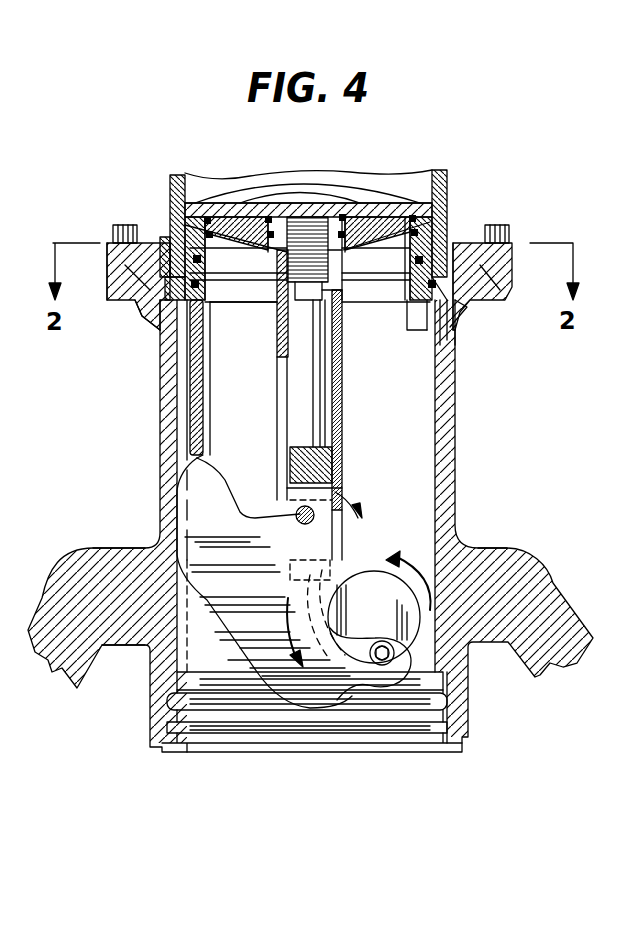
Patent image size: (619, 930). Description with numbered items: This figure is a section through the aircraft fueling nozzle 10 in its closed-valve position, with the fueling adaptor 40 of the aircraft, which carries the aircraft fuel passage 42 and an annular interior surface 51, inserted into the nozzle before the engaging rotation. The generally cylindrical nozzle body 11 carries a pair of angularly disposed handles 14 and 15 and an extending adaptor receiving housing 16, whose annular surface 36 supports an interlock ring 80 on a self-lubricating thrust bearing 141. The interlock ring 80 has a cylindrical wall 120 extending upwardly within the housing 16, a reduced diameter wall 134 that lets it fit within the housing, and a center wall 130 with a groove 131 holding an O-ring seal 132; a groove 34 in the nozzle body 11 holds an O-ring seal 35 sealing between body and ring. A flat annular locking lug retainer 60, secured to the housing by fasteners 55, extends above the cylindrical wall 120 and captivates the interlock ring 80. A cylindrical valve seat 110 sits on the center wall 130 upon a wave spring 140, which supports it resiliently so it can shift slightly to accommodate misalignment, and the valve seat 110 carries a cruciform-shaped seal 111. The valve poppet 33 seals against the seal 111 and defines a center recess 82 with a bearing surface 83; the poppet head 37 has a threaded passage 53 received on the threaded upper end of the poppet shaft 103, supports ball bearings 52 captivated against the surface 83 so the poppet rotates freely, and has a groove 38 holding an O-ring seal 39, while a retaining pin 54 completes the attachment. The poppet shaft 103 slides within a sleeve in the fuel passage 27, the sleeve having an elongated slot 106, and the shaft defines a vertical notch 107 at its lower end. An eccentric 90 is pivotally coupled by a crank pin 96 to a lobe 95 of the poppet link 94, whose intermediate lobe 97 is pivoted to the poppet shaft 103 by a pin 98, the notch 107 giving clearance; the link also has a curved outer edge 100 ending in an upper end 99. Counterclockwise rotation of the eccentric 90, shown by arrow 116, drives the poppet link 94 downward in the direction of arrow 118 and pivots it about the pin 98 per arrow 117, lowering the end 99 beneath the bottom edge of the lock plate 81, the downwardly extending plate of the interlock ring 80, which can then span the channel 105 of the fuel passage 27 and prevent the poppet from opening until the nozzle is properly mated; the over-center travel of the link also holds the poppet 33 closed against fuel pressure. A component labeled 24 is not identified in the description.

The aircraft fueling nozzle 10 is at (518, 222).
The nozzle body 11 is at (455, 410).
The handle 14 is at (85, 555).
The handle 15 is at (560, 580).
The adaptor receiving housing 16 is at (113, 302).
The stem nut 24 is at (287, 260).
The fuel passage 27 is at (393, 415).
The valve poppet 33 is at (405, 217).
The groove 34 is at (463, 355).
The O-ring seal 35 is at (463, 338).
The annular surface 36 is at (466, 320).
The poppet head 37 is at (335, 217).
The groove 38 is at (305, 217).
The O-ring seal 39 is at (292, 217).
The fueling adaptor 40 is at (178, 176).
The fuel passage 42 is at (305, 192).
The annular interior surface 51 is at (200, 217).
The ball bearings 52 is at (378, 225).
The threaded passage 53 is at (345, 262).
The retaining pin 54 is at (343, 290).
The fasteners 55 is at (125, 223).
The locking lug retainer 60 is at (515, 241).
The interlock ring 80 is at (350, 302).
The lock plate 81 is at (197, 400).
The center recess 82 is at (346, 227).
The bearing surface 83 is at (266, 217).
The eccentric 90 is at (348, 577).
The poppet link 94 is at (142, 657).
The lobe 95 is at (420, 685).
The crank pin 96 is at (395, 655).
The intermediate lobe 97 is at (312, 540).
The pin 98 is at (318, 515).
The upper end 99 is at (213, 468).
The curved outer edge 100 is at (245, 660).
The poppet shaft 103 is at (305, 418).
The channel 105 is at (180, 378).
The elongated slot 106 is at (283, 362).
The vertical notch 107 is at (300, 515).
The valve seat 110 is at (460, 260).
The cruciform-shaped seal 111 is at (420, 217).
The arrow 116 is at (428, 565).
The arrow 117 is at (282, 572).
The arrow 118 is at (283, 628).
The cylindrical wall 120 is at (470, 262).
The center wall 130 is at (350, 285).
The groove 131 is at (202, 290).
The O-ring seal 132 is at (207, 262).
The reduced diameter wall 134 is at (353, 330).
The wave spring 140 is at (480, 300).
The thrust bearing 141 is at (163, 325).